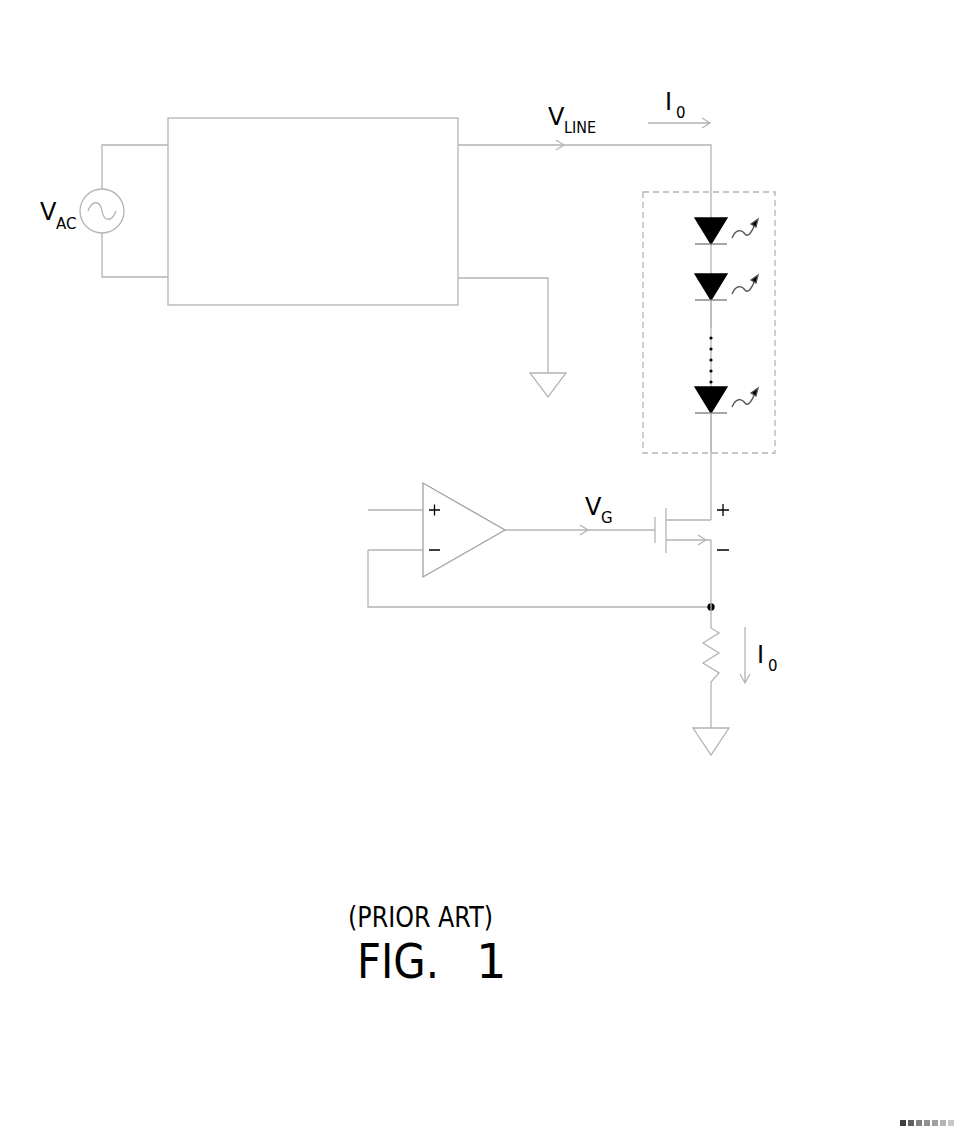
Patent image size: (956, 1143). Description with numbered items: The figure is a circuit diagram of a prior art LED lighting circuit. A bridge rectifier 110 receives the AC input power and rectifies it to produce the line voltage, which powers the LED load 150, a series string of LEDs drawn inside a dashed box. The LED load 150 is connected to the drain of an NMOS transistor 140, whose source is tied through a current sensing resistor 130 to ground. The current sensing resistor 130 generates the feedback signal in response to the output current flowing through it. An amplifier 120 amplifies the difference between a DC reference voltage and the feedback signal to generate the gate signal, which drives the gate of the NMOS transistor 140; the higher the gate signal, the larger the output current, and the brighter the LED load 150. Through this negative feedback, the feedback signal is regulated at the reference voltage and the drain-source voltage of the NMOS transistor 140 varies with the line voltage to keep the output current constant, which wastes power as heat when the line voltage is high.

The bridge rectifier 110 is at (252, 118).
The amplifier 120 is at (457, 519).
The current sensing resistor 130 is at (707, 667).
The NMOS transistor 140 is at (705, 530).
The LED load 150 is at (758, 317).